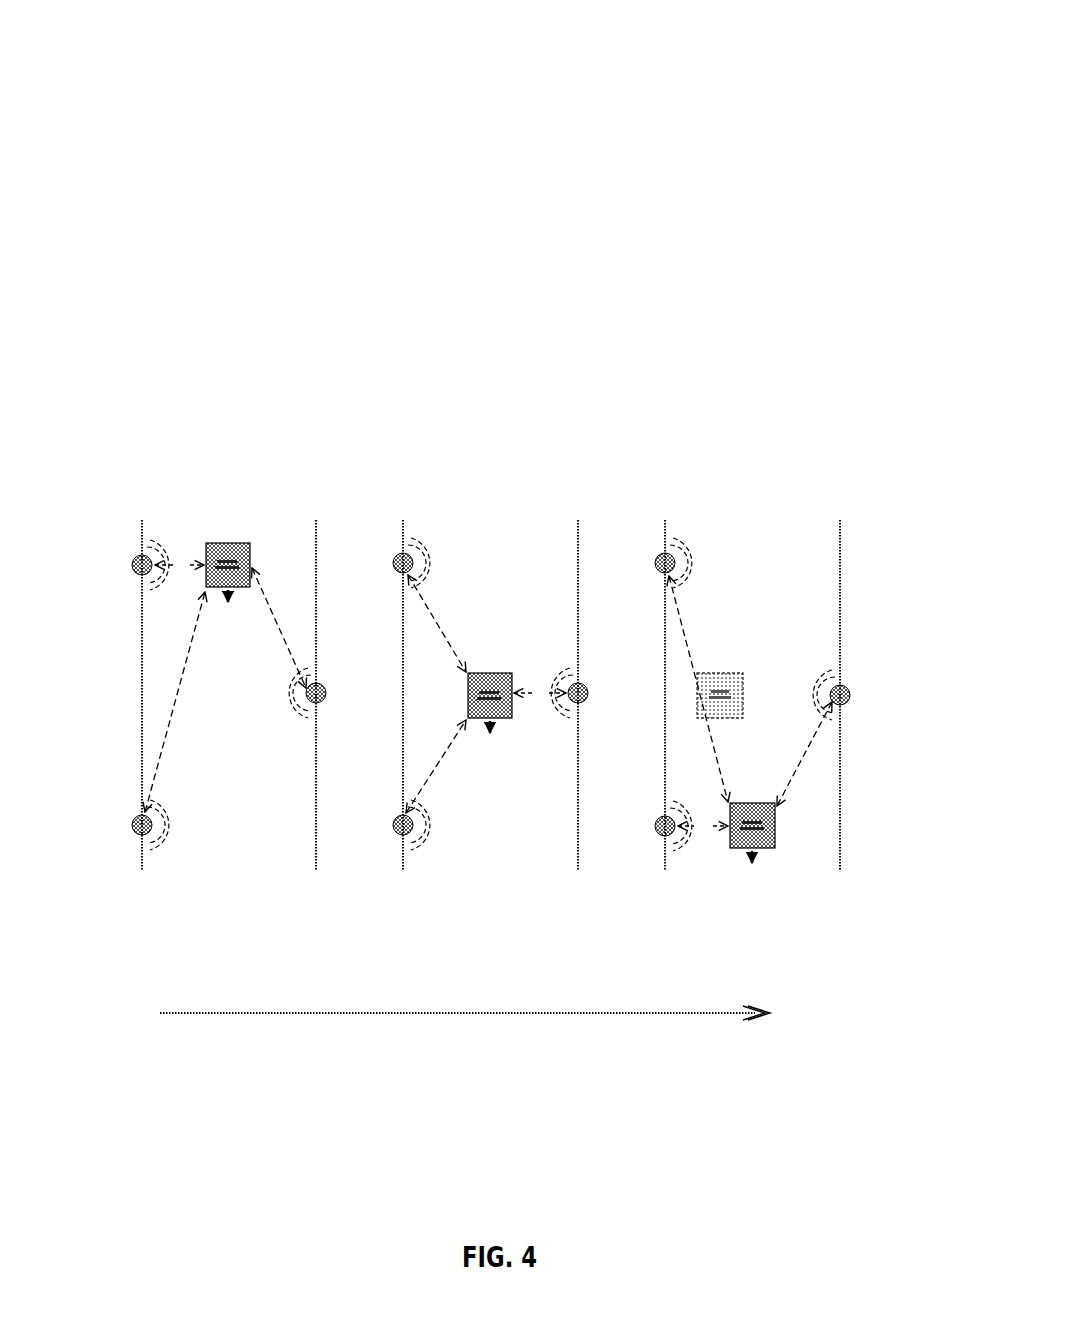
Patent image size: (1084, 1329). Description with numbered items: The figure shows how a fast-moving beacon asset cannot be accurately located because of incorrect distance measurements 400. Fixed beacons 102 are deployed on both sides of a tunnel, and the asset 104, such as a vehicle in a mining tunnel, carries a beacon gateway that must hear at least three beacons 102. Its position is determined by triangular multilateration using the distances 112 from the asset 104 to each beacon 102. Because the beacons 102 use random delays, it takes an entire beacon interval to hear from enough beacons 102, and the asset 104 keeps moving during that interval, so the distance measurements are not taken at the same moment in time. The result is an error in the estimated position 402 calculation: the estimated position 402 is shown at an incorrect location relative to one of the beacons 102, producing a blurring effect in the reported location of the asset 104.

The incorrect distance measurements 400 is at (886, 72).
The beacon 102 is at (486, 694).
The asset 104 is at (541, 670).
The distance 112 is at (456, 697).
The estimated position 402 is at (745, 688).